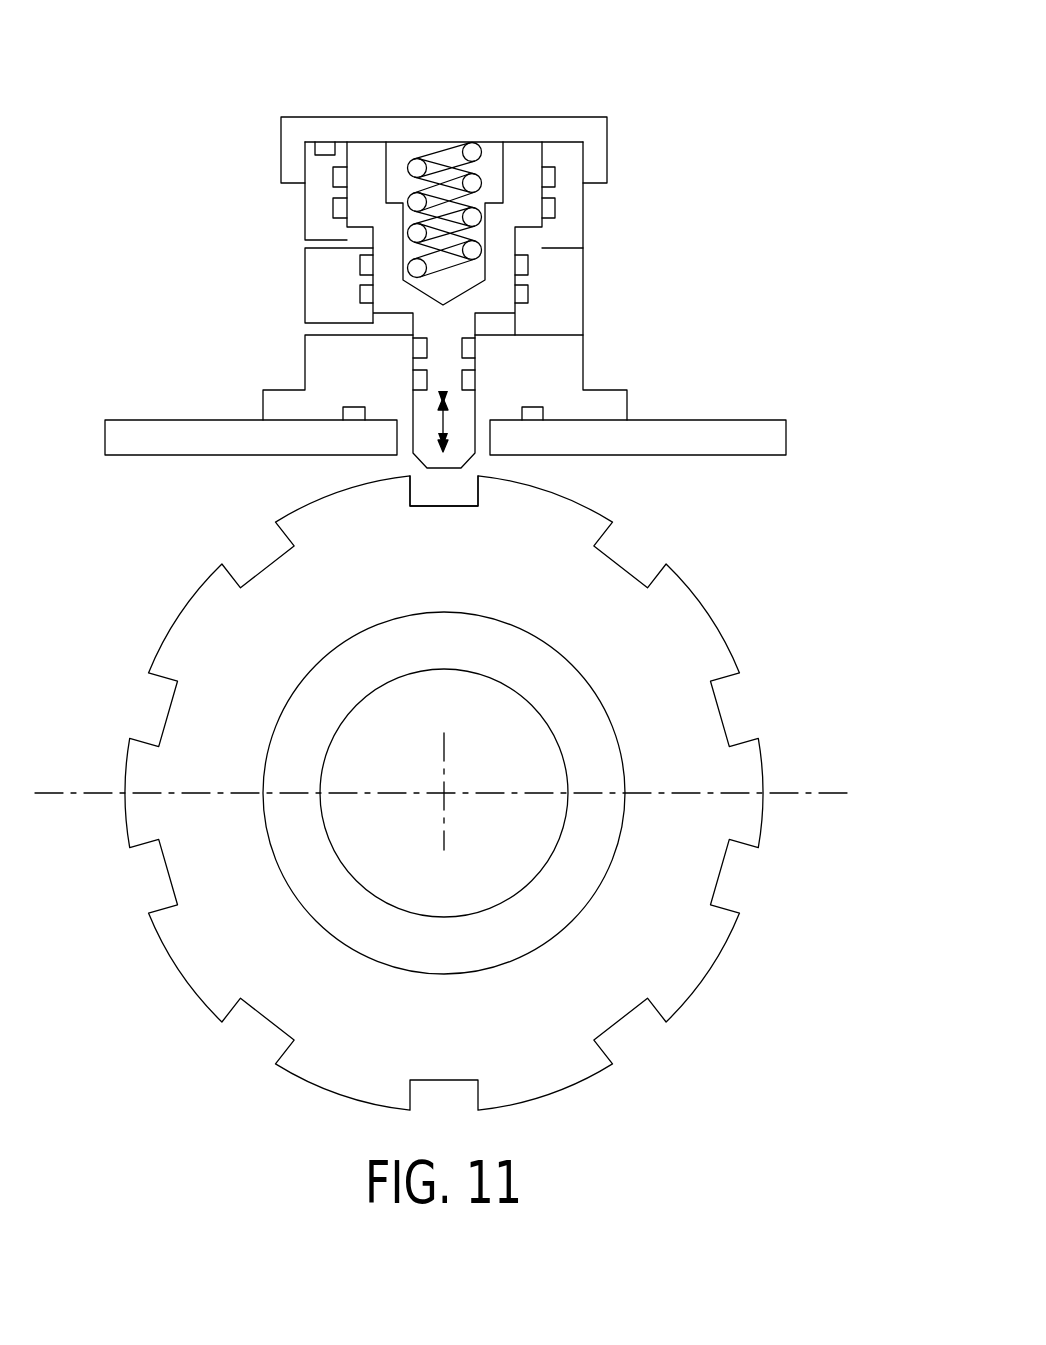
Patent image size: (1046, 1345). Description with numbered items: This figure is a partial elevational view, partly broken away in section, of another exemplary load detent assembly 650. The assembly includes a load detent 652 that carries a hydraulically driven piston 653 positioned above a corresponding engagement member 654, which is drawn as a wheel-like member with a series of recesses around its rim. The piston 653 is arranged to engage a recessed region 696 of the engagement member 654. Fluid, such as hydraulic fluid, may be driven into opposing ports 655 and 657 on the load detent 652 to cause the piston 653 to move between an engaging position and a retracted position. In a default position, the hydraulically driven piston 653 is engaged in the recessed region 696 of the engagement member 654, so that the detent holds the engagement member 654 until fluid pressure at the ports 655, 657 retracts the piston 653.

The load detent assembly 650 is at (802, 100).
The load detent 652 is at (610, 232).
The hydraulically driven piston 653 is at (476, 400).
The engagement member 654 is at (547, 580).
The port 655 is at (290, 242).
The port 657 is at (292, 327).
The recessed region 696 is at (450, 507).